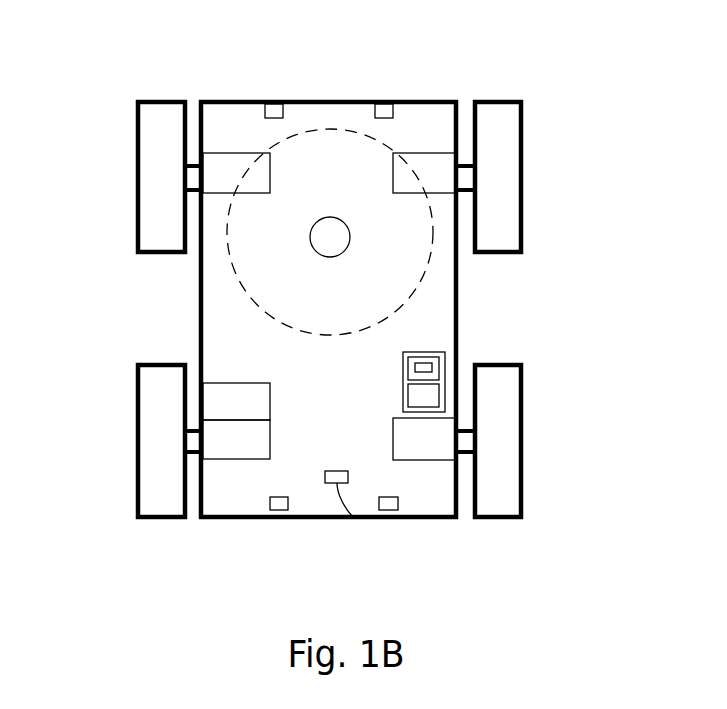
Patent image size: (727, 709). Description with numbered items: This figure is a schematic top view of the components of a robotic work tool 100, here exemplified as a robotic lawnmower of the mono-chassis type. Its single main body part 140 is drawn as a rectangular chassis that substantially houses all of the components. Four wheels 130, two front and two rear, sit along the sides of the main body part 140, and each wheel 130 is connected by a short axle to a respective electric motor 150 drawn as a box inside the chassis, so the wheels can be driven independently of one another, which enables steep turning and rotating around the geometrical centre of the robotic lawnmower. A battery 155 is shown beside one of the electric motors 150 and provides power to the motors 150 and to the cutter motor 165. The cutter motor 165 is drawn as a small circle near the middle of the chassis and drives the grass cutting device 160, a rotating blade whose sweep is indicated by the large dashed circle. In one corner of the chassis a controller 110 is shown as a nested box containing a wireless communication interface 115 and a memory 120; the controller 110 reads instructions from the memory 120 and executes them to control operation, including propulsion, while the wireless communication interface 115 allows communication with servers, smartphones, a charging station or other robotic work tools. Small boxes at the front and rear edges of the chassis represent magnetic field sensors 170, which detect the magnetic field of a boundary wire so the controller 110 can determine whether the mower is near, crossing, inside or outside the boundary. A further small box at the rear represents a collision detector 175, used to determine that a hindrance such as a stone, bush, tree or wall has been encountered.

The robotic work tool 100 is at (186, 92).
The controller 110 is at (443, 357).
The wireless communication interface 115 is at (432, 366).
The memory 120 is at (443, 383).
The wheels 130 is at (158, 100).
The main body part 140 is at (421, 100).
The electric motor 150 is at (330, 306).
The battery 155 is at (236, 401).
The grass cutting device 160 is at (248, 300).
The cutter motor 165 is at (318, 255).
The magnetic field sensor 170 is at (285, 100).
The collision detector 175 is at (352, 519).